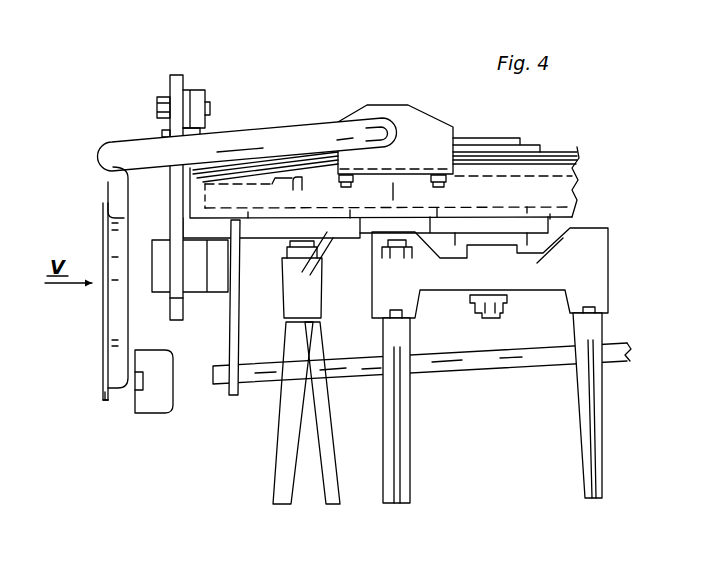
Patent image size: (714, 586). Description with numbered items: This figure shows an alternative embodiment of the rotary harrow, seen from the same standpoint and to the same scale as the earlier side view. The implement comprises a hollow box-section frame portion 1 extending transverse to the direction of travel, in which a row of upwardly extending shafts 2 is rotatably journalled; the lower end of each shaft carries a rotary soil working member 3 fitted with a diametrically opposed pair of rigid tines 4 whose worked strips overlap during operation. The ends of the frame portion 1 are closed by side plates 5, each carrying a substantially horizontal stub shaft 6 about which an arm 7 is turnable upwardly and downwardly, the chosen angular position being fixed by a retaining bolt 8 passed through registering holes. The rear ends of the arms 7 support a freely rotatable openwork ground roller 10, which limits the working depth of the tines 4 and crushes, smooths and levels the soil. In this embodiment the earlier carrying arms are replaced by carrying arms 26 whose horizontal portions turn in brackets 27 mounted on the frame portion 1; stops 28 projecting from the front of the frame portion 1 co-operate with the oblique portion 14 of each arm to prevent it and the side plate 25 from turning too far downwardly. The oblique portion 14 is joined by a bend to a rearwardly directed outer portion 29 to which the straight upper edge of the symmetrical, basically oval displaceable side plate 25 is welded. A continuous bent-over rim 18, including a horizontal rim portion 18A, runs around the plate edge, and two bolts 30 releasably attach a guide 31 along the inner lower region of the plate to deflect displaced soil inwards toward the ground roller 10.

The hollow box-section frame portion 1 is at (577, 147).
The shafts 2 is at (490, 144).
The rotary soil working member 3 is at (387, 437).
The tines 4 is at (276, 459).
The side plates 5 is at (187, 92).
The stub shaft 6 is at (200, 128).
The arm 7 is at (174, 75).
The retaining bolt 8 is at (208, 102).
The ground roller 10 is at (227, 398).
The oblique portion 14 is at (257, 140).
The rim 18 is at (104, 318).
The horizontal rim portion 18A is at (115, 392).
The side plates 25 is at (101, 206).
The carrying arms 26 is at (318, 119).
The brackets 27 is at (418, 122).
The stops 28 is at (292, 184).
The outer portion 29 is at (107, 148).
The bolts 30 is at (168, 353).
The guide 31 is at (147, 414).